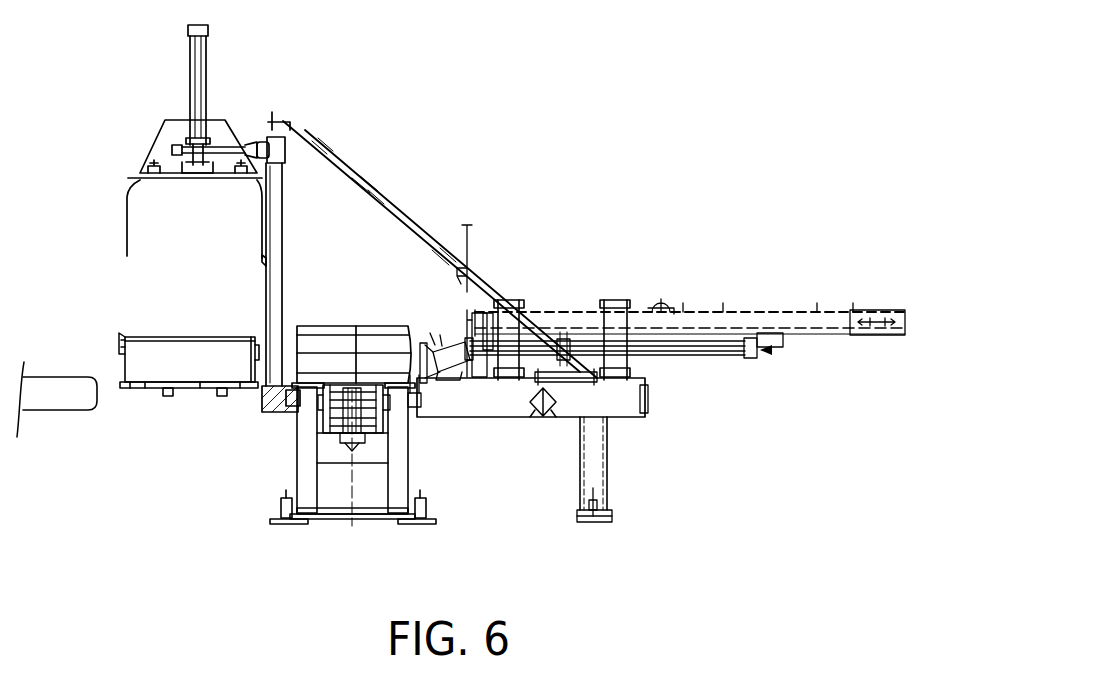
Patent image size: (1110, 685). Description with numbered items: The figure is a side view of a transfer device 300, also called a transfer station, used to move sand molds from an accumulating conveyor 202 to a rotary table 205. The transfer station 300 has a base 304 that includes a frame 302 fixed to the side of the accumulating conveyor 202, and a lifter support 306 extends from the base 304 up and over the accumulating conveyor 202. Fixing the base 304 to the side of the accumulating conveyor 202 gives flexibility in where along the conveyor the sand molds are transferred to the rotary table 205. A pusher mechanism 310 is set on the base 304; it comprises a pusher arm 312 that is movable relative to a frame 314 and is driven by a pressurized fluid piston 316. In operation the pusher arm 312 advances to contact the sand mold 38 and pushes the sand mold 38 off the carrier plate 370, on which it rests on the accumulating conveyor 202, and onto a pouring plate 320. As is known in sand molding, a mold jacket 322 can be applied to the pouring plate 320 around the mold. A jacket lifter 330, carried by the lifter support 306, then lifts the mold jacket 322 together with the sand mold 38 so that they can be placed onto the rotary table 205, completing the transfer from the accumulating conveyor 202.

The transfer device 300 is at (656, 335).
The frame 302 is at (622, 420).
The base 304 is at (650, 397).
The lifter support 306 is at (361, 170).
The pusher mechanism 310 is at (574, 308).
The pusher arm 312 is at (431, 364).
The frame 314 is at (708, 306).
The pressurized fluid piston 316 is at (707, 356).
The pouring plate 320 is at (188, 388).
The mold jacket 322 is at (119, 346).
The jacket lifter 330 is at (240, 92).
The sand mold 38 is at (312, 326).
The carrier plate 370 is at (368, 385).
The accumulating conveyor 202 is at (300, 462).
The rotary table 205 is at (60, 411).